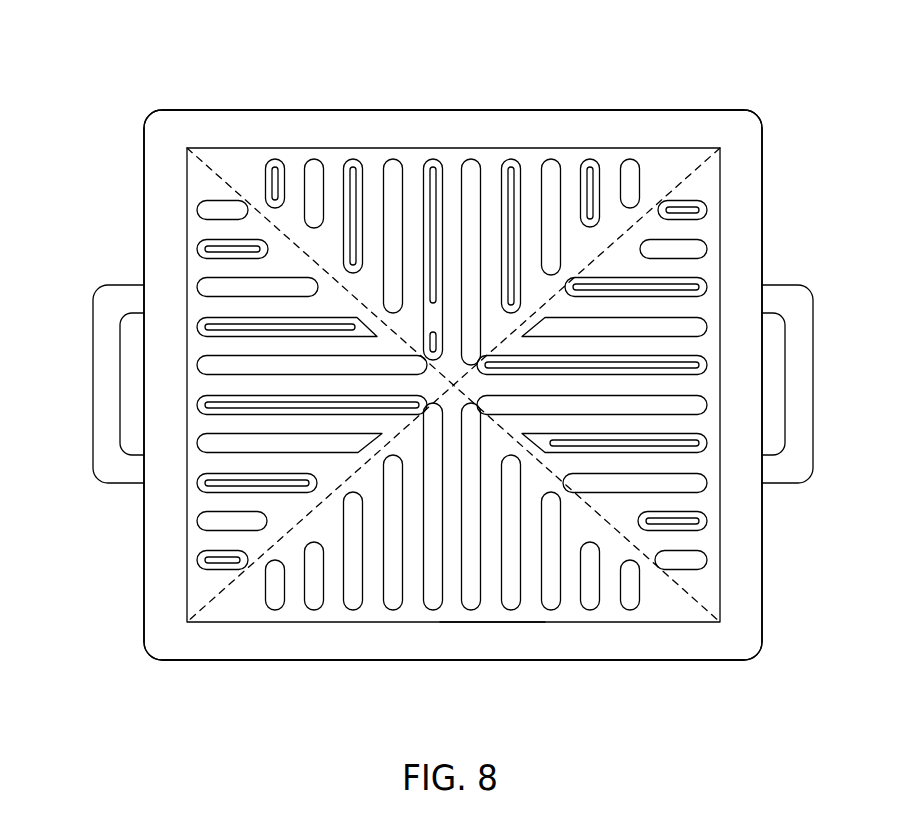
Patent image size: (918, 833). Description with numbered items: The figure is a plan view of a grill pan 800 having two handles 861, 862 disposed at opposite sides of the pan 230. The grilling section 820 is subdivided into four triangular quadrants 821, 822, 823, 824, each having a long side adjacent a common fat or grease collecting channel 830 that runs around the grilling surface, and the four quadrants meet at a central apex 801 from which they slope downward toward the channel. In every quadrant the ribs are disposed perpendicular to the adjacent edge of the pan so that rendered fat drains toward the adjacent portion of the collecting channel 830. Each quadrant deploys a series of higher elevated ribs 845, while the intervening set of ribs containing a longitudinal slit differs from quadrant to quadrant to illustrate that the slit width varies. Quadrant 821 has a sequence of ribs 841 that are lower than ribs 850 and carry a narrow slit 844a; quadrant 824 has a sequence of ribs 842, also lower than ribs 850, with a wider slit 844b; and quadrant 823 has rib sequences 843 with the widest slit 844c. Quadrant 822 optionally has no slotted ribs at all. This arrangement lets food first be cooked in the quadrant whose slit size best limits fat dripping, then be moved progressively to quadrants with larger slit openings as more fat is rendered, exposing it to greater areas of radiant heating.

The grill pan 800 is at (120, 72).
The grilling section 820 is at (195, 88).
The grate plate 230 is at (750, 585).
The fat or grease collecting channel 830 is at (609, 156).
The quadrant 824 is at (423, 110).
The quadrant 823 is at (763, 133).
The quadrant 821 is at (139, 585).
The quadrant 822 is at (265, 661).
The handle 861 is at (92, 381).
The handle 862 is at (813, 385).
The narrow slit 844a is at (197, 477).
The wider slit 844b is at (272, 160).
The widest slit 844c is at (707, 286).
The ribs 841 is at (197, 553).
The ribs 842 is at (617, 158).
The rib sequences 843 is at (707, 521).
The higher elevated ribs 845 is at (492, 612).
The apex 801 is at (433, 259).
The ribs 850 is at (313, 160).